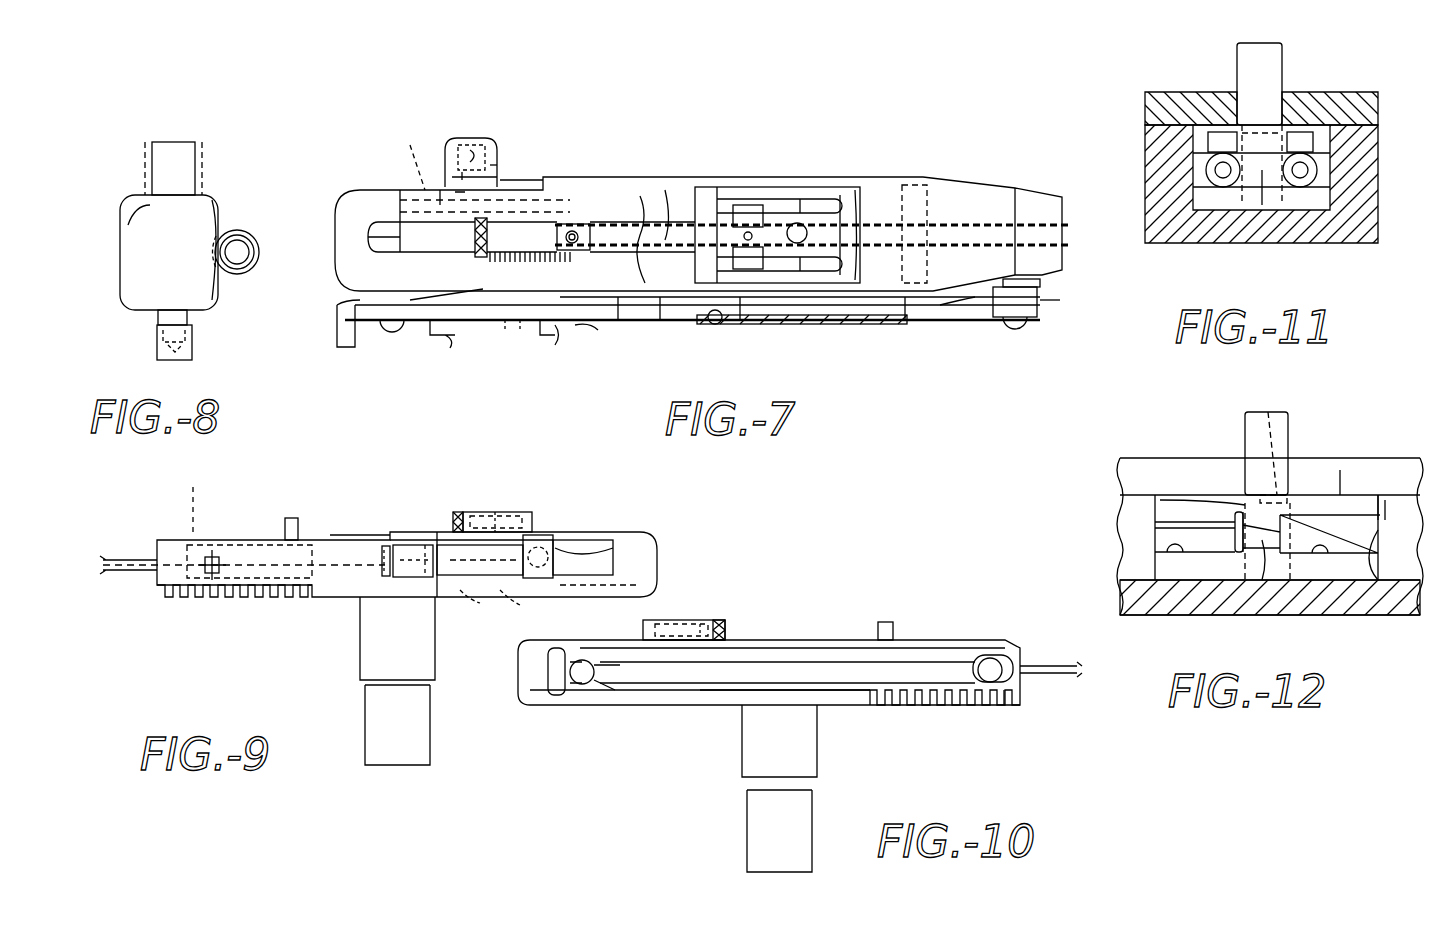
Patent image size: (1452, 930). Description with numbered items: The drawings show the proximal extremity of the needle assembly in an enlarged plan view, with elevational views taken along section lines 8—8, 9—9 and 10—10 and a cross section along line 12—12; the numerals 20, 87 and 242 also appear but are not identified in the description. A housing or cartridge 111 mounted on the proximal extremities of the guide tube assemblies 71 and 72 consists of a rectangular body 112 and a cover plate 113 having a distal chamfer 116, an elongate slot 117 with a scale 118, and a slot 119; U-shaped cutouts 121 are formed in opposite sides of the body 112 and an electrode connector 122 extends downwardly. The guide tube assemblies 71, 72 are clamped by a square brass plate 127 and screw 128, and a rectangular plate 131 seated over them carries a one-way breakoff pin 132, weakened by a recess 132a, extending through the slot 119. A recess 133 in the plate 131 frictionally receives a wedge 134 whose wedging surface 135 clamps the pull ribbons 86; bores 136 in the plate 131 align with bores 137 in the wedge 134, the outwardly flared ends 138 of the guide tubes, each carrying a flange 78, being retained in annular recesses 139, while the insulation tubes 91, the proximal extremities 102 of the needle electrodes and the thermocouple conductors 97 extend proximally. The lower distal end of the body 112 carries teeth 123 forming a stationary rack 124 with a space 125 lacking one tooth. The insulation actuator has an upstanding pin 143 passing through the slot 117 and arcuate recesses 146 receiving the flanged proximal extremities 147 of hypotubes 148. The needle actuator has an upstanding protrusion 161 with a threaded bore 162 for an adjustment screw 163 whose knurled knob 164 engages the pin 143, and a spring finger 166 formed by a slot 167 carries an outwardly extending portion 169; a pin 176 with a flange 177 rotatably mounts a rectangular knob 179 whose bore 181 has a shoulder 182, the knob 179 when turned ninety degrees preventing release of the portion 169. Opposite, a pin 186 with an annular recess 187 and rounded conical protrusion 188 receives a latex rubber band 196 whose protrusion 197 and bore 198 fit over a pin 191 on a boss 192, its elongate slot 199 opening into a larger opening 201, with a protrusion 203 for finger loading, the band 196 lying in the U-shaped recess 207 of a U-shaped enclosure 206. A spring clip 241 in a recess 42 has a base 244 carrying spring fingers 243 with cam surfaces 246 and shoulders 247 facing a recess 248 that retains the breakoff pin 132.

In FIG. 8, the section line 8— 8 is at (257, 95).
In FIG. 8, the section line 9— 9 is at (330, 118).
In FIG. 7, the section line 9— 9 is at (330, 116).
In FIG. 8, the section line 10— 10 is at (312, 365).
In FIG. 7, the section line 10— 10 is at (935, 357).
In FIG. 9, the section line 10— 10 is at (320, 520).
In FIG. 11, the section line 12— 12 is at (1198, 287).
In FIG. 7, the knurled adjustment ring 20 is at (522, 252).
In FIG. 7, the recess 42 is at (900, 322).
In FIG. 7, the guide tube assembly 71 is at (660, 310).
In FIG. 7, the guide tube assembly 72 is at (668, 190).
In FIG. 9, the guide tube assembly 72 is at (135, 572).
In FIG. 9, the flange 78 is at (193, 499).
In FIG. 12, the pull ribbon 86 is at (1333, 515).
In FIG. 11, the pawl block 87 is at (1300, 140).
In FIG. 12, the pawl block 87 is at (1390, 500).
In FIG. 11, the insulation tube 91 is at (1305, 170).
In FIG. 12, the insulation tube 91 is at (1262, 545).
In FIG. 9, the thermocouple conductors 97 is at (475, 607).
In FIG. 9, the proximal extremity of needle electrode 102 is at (522, 611).
In FIG. 7, the housing or cartridge 111 is at (656, 106).
In FIG. 8, the body 112 is at (142, 212).
In FIG. 12, the body 112 is at (1135, 592).
In FIG. 8, the cover plate 113 is at (212, 215).
In FIG. 11, the cover plate 113 is at (1375, 95).
In FIG. 12, the cover plate 113 is at (1140, 475).
In FIG. 9, the chamfer 116 is at (185, 540).
In FIG. 7, the elongate slot 117 is at (630, 222).
In FIG. 7, the scale 118 is at (512, 322).
In FIG. 9, the slot 119 is at (335, 532).
In FIG. 12, the slot 119 is at (1343, 470).
In FIG. 9, the U-shaped cutouts 121 is at (595, 540).
In FIG. 9, the electrode connector 122 is at (435, 653).
In FIG. 10, the electrode connector 122 is at (817, 752).
In FIG. 9, the teeth 123 is at (232, 600).
In FIG. 10, the teeth 123 is at (935, 705).
In FIG. 9, the stationary rack 124 is at (205, 612).
In FIG. 10, the stationary rack 124 is at (905, 715).
In FIG. 10, the space 125 is at (990, 705).
In FIG. 7, the square brass plate 127 is at (620, 320).
In FIG. 7, the screw 128 is at (620, 222).
In FIG. 11, the rectangular plate 131 is at (1145, 115).
In FIG. 12, the rectangular plate 131 is at (1190, 505).
In FIG. 7, the one-way breakoff pin 132 is at (800, 223).
In FIG. 9, the one-way breakoff pin 132 is at (285, 522).
In FIG. 10, the one-way breakoff pin 132 is at (893, 630).
In FIG. 11, the one-way breakoff pin 132 is at (1282, 67).
In FIG. 12, the one-way breakoff pin 132 is at (1280, 425).
In FIG. 11, the recess 132a is at (1272, 130).
In FIG. 12, the recess 132a is at (1262, 412).
In FIG. 12, the recess 133 is at (1320, 555).
In FIG. 11, the wedge 134 is at (1262, 180).
In FIG. 12, the wedge 134 is at (1400, 615).
In FIG. 12, the wedging surface 135 is at (1358, 513).
In FIG. 12, the bores 136 is at (1180, 560).
In FIG. 11, the bores 137 is at (1305, 183).
In FIG. 12, the outwardly flared ends 138 is at (1238, 512).
In FIG. 12, the annular recesses 139 is at (1240, 555).
In FIG. 7, the upstanding pin 143 is at (642, 196).
In FIG. 9, the upstanding pin 143 is at (415, 532).
In FIG. 9, the arcuate recesses 146 is at (400, 580).
In FIG. 9, the flanged proximal extremities 147 is at (386, 576).
In FIG. 9, the hypotubes 148 is at (325, 578).
In FIG. 8, the upstanding protrusion 161 is at (261, 259).
In FIG. 7, the upstanding protrusion 161 is at (420, 218).
In FIG. 9, the upstanding protrusion 161 is at (515, 512).
In FIG. 10, the upstanding protrusion 161 is at (690, 625).
In FIG. 7, the threaded bore 162 is at (450, 198).
In FIG. 9, the threaded bore 162 is at (540, 535).
In FIG. 9, the adjustment screw 163 is at (590, 592).
In FIG. 10, the adjustment screw 163 is at (650, 632).
In FIG. 9, the knurled knob 164 is at (455, 512).
In FIG. 10, the knurled knob 164 is at (726, 630).
In FIG. 7, the spring finger 166 is at (440, 252).
In FIG. 7, the slot 167 is at (513, 226).
In FIG. 7, the outwardly extending portion 169 is at (550, 160).
In FIG. 9, the outwardly extending portion 169 is at (510, 500).
In FIG. 7, the pin 176 is at (478, 140).
In FIG. 9, the pin 176 is at (645, 580).
In FIG. 10, the pin 176 is at (665, 630).
In FIG. 7, the flange 177 is at (462, 172).
In FIG. 8, the knob 179 is at (146, 152).
In FIG. 7, the knob 179 is at (476, 140).
In FIG. 9, the knob 179 is at (640, 540).
In FIG. 7, the bore 181 is at (496, 160).
In FIG. 8, the shoulder 182 is at (252, 241).
In FIG. 7, the shoulder 182 is at (505, 180).
In FIG. 8, the pin 186 is at (158, 318).
In FIG. 7, the pin 186 is at (345, 290).
In FIG. 7, the annular recess 187 is at (352, 305).
In FIG. 8, the rounded conical protrusion 188 is at (171, 360).
In FIG. 7, the rounded conical protrusion 188 is at (387, 378).
In FIG. 10, the rounded conical protrusion 188 is at (580, 680).
In FIG. 7, the outwardly extending pin 191 is at (1012, 328).
In FIG. 10, the outwardly extending pin 191 is at (1000, 670).
In FIG. 7, the boss 192 is at (1040, 285).
In FIG. 10, the rubber band 196 is at (640, 695).
In FIG. 7, the inwardly extending protrusion 197 is at (1060, 300).
In FIG. 7, the bore 198 is at (955, 305).
In FIG. 10, the elongate slot 199 is at (725, 692).
In FIG. 10, the larger opening 201 is at (598, 685).
In FIG. 7, the outwardly extending protrusion 203 is at (352, 352).
In FIG. 10, the outwardly extending protrusion 203 is at (555, 690).
In FIG. 7, the U-shaped enclosure 206 is at (800, 325).
In FIG. 7, the U-shaped recess 207 is at (712, 324).
In FIG. 7, the spring clip 241 is at (855, 190).
In FIG. 7, the end wall 242 is at (840, 200).
In FIG. 7, the spring fingers 243 is at (720, 199).
In FIG. 7, the base 244 is at (890, 200).
In FIG. 7, the cam surfaces 246 is at (748, 205).
In FIG. 7, the shoulders 247 is at (742, 322).
In FIG. 7, the recess 248 is at (800, 199).